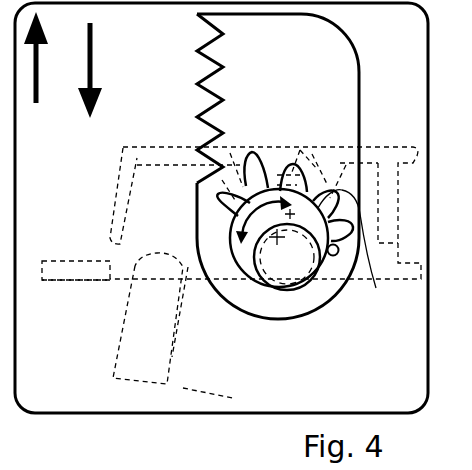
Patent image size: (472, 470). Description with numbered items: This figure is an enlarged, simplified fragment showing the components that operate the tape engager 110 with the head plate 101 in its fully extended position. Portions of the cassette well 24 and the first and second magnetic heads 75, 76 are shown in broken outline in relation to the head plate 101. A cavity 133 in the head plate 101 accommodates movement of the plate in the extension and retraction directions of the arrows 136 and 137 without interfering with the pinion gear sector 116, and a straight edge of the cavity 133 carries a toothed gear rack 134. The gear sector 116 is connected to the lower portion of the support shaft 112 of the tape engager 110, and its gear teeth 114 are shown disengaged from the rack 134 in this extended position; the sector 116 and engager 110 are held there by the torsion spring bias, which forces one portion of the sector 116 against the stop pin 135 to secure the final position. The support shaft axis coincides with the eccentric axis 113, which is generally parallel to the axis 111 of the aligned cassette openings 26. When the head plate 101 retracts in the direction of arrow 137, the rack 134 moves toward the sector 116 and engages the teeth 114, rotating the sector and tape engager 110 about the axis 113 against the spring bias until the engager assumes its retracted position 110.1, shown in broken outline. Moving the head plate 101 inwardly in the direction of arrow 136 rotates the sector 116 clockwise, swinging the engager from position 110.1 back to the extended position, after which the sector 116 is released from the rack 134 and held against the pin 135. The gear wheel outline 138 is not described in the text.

The head plate 101 is at (43, 413).
The extension direction arrow 136 is at (48, 64).
The retraction direction arrow 137 is at (105, 60).
The cavity 133 is at (298, 45).
The toothed gear rack 134 is at (245, 60).
The cassette well 24 is at (170, 180).
The first magnetic head 75 is at (144, 372).
The second magnetic head 76 is at (188, 377).
The gear wheel 138 is at (237, 222).
The gear teeth 114 is at (249, 158).
The tape engager 110 is at (298, 284).
The support shaft 112 is at (309, 253).
The eccentric axis 113 is at (280, 241).
The stop pin 135 is at (333, 256).
The axis of the openings 111 is at (361, 250).
The pinion gear sector 116 is at (242, 256).
The openings 26 is at (346, 155).
The retracted position of the tape engager 110.1 is at (300, 150).